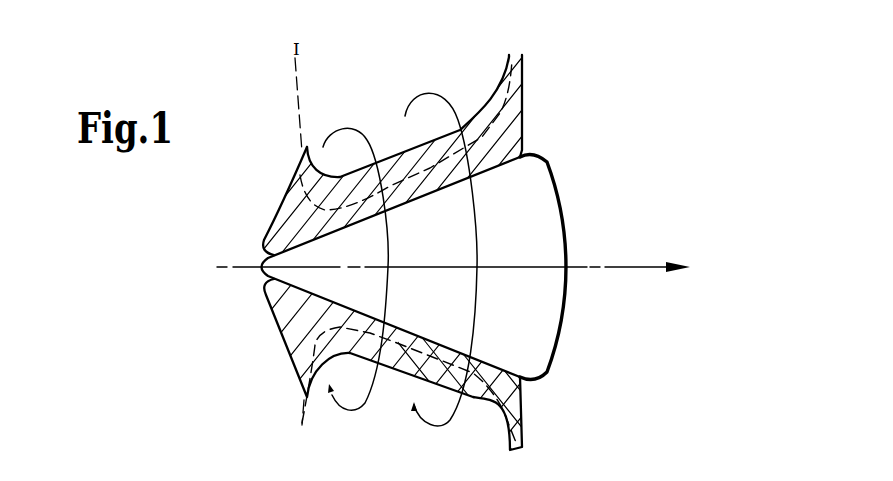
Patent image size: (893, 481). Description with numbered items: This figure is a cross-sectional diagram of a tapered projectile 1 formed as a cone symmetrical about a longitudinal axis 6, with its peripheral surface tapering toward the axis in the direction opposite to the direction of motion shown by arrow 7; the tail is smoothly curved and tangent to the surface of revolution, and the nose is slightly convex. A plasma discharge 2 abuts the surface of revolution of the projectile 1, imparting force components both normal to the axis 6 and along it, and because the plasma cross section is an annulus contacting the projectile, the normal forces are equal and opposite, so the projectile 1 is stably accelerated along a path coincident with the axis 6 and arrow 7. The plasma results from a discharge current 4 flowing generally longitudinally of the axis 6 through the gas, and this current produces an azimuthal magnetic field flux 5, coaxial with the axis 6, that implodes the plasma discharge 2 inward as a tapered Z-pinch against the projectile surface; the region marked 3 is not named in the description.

The tapered projectile 1 is at (525, 257).
The plasma discharge 2 is at (413, 158).
The outer duct wall 3 is at (556, 81).
The discharge current 4 is at (325, 83).
The azimuthal magnetic field flux 5 is at (436, 431).
The longitudinal axis 6 is at (577, 270).
The arrow 7 is at (643, 270).